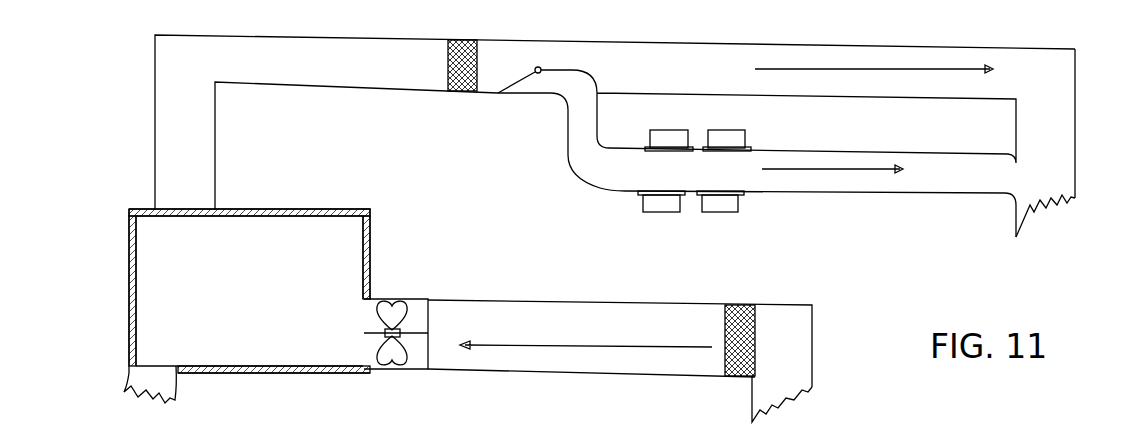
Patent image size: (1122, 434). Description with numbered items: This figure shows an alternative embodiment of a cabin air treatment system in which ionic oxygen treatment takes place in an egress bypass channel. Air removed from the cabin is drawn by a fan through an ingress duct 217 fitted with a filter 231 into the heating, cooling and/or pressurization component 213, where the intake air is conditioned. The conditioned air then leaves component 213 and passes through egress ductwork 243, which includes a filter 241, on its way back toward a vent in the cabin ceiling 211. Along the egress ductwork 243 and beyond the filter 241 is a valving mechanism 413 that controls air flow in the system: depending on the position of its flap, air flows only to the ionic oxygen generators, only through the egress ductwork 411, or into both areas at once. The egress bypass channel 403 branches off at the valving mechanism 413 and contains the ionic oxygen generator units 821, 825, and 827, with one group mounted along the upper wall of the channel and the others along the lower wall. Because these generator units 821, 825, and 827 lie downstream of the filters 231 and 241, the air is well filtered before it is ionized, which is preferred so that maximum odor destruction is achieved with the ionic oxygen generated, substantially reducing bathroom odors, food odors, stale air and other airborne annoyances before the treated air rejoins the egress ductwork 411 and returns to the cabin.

The egress ductwork 243 is at (246, 35).
The filter 241 is at (460, 40).
The valving mechanism 413 is at (535, 67).
The supply duct 411 is at (619, 47).
The egress bypass channel 403 is at (592, 125).
The ionic oxygen generator unit 821 is at (736, 135).
The ionic oxygen generator unit 825 is at (653, 208).
The ionic oxygen generator unit 827 is at (730, 208).
The cabin ceiling 211 is at (392, 300).
The heating, cooling and/or pressurization component 213 is at (305, 374).
The return duct 217 is at (628, 374).
The filter 231 is at (757, 345).